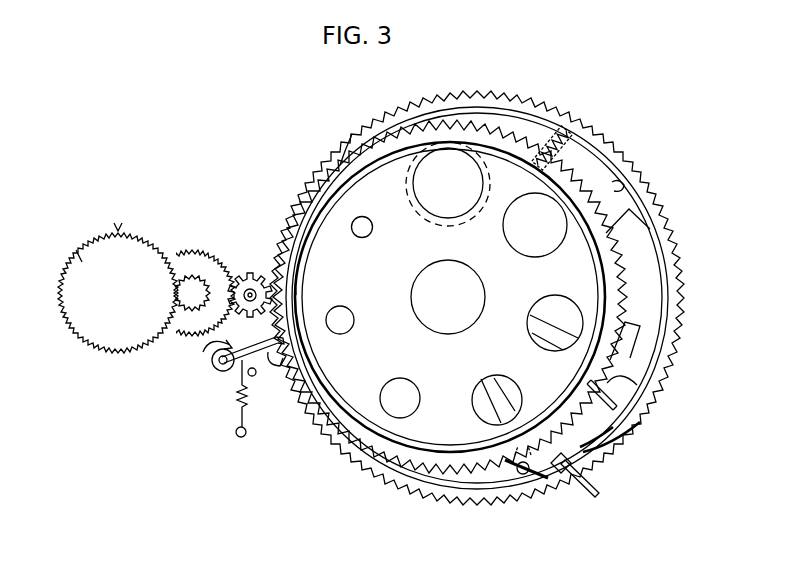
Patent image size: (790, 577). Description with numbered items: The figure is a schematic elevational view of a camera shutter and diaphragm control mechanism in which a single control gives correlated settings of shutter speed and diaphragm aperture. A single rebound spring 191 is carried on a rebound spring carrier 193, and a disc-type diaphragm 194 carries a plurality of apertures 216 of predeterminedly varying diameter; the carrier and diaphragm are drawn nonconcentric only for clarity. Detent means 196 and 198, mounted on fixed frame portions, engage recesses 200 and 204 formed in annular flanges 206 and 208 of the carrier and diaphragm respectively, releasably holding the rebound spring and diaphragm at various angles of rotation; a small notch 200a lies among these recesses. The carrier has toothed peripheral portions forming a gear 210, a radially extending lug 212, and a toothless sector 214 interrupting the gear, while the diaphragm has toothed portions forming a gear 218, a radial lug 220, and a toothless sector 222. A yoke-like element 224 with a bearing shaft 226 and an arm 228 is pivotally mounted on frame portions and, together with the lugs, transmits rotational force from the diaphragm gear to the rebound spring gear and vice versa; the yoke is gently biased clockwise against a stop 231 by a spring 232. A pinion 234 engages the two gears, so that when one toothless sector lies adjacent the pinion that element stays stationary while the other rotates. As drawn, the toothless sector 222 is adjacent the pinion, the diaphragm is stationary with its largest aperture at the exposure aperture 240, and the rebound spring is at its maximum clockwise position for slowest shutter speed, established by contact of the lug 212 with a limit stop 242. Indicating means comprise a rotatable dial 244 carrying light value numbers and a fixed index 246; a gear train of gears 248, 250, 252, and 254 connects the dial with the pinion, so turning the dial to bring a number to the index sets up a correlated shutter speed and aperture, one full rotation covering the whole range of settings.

The rebound spring 191 is at (632, 393).
The rebound spring carrier 193 is at (620, 442).
The disc-type diaphragm 194 is at (498, 357).
The detent means 196 is at (525, 475).
The detent means 198 is at (546, 168).
The recesses 200 is at (633, 228).
The notch 200a is at (622, 185).
The recesses 204 is at (402, 150).
The annular flange 206 is at (667, 242).
The annular flange 208 is at (358, 162).
The gear 210 is at (605, 455).
The lug 212 is at (575, 468).
The toothless sector 214 is at (558, 482).
The apertures 216 is at (558, 296).
The gear 218 is at (625, 330).
The lug 220 is at (284, 368).
The toothless sector 222 is at (292, 290).
The yoke-like element 224 is at (218, 366).
The bearing shaft 226 is at (216, 372).
The arm 228 is at (280, 341).
The stop 231 is at (252, 377).
The spring 232 is at (238, 405).
The pinion 234 is at (252, 270).
The exposure aperture 240 is at (447, 228).
The limit stop 242 is at (578, 493).
The rotatable dial 244 is at (104, 345).
The fixed index 246 is at (117, 226).
The gear 248 is at (77, 252).
The gear 250 is at (188, 312).
The gear 252 is at (207, 252).
The gear 254 is at (242, 272).